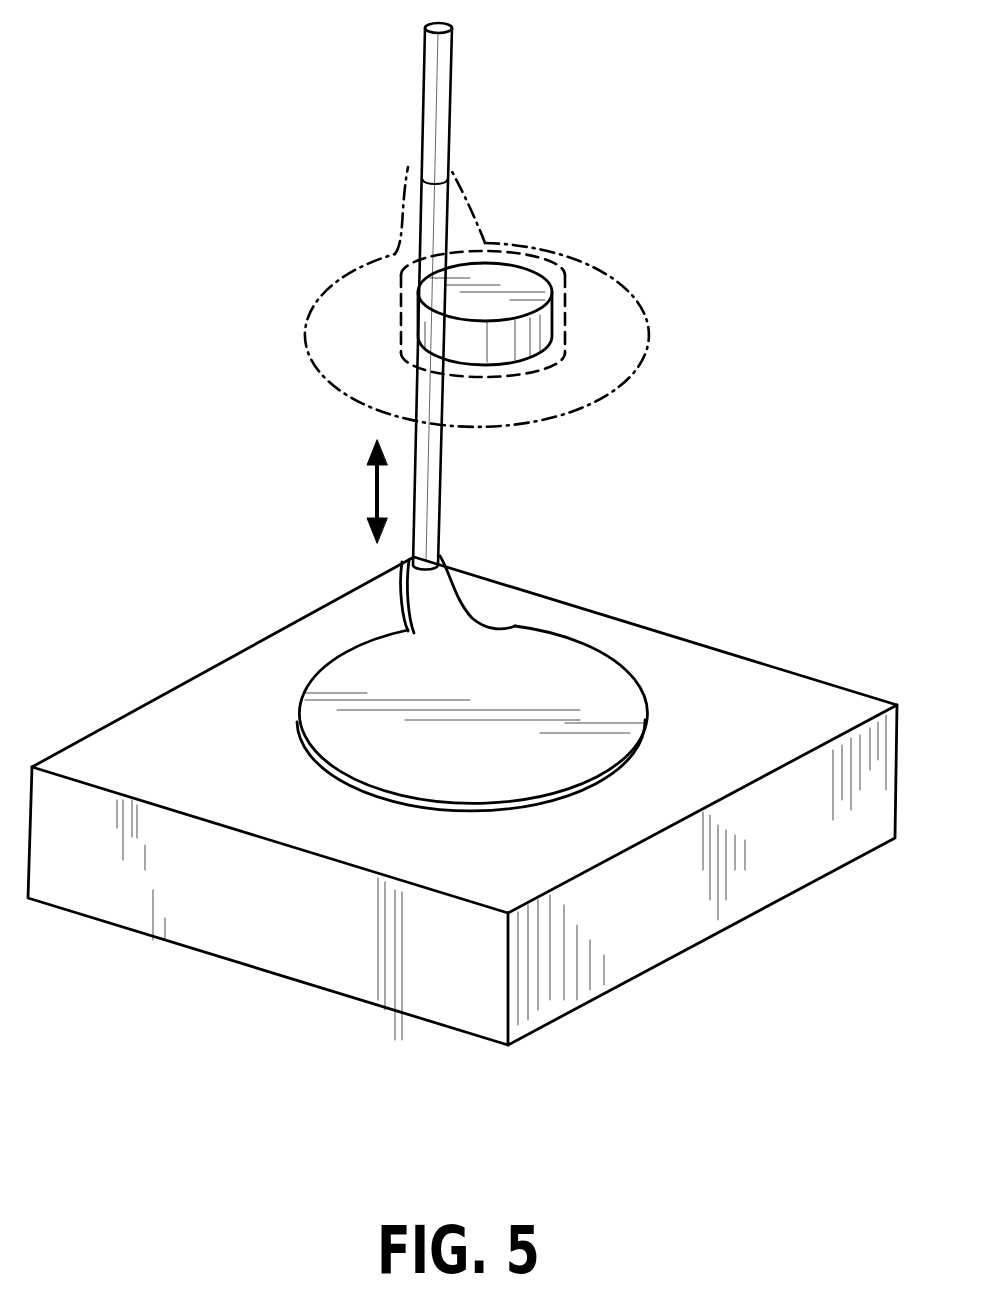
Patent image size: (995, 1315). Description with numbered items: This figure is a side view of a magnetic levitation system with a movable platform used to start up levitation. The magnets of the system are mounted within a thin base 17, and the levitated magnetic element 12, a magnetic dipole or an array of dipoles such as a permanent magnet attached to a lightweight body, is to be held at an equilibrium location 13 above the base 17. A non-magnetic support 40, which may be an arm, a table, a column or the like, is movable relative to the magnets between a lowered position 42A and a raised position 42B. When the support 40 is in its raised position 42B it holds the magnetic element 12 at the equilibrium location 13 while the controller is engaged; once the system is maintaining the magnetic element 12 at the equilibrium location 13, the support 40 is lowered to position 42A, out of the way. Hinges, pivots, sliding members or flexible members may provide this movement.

The magnetic element 12 is at (553, 313).
The equilibrium location 13 is at (565, 347).
The base 17 is at (773, 697).
The non-magnetic support 40 is at (604, 660).
The lowered position 42A is at (337, 657).
The raised position 42B is at (602, 272).